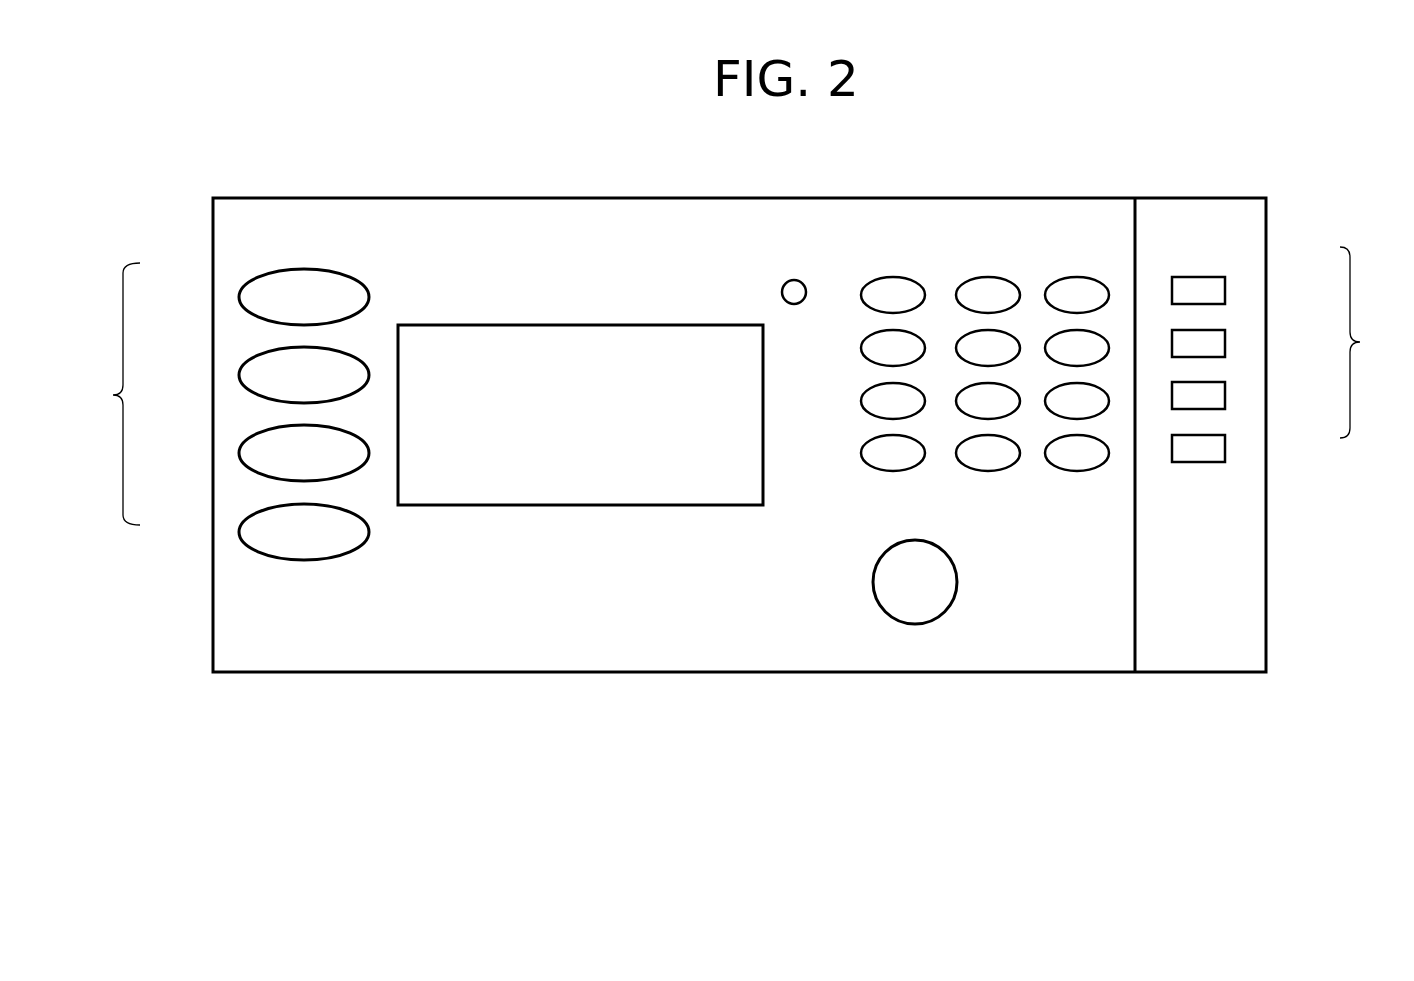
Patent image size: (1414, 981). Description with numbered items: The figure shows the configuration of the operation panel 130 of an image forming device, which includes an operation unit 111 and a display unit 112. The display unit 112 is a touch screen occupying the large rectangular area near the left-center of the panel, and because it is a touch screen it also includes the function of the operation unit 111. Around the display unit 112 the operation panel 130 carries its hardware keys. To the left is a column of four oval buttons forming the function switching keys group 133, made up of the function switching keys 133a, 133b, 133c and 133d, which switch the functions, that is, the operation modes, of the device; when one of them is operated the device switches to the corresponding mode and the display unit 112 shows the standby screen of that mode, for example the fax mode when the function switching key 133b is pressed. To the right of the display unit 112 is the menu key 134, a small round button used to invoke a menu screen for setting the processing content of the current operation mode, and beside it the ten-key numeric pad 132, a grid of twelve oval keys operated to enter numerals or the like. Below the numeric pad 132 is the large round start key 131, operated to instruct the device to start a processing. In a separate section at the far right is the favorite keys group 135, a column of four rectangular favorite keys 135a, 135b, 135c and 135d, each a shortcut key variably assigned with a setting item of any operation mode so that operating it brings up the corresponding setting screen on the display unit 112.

The operation unit 111 is at (357, 280).
The display unit 112 is at (583, 507).
The operation panel 130 is at (675, 673).
The start key 131 is at (873, 580).
The ten-key numeric pad 132 is at (1005, 485).
The function switching keys group 133 is at (106, 394).
The function switching key 133a is at (240, 297).
The function switching key 133b is at (240, 375).
The function switching key 133c is at (240, 453).
The function switching key 133d is at (240, 532).
The menu key 134 is at (800, 303).
The favorite keys group 135 is at (1278, 340).
The favorite key 135a is at (1226, 290).
The favorite key 135b is at (1226, 343).
The favorite key 135c is at (1226, 395).
The favorite key 135d is at (1226, 448).